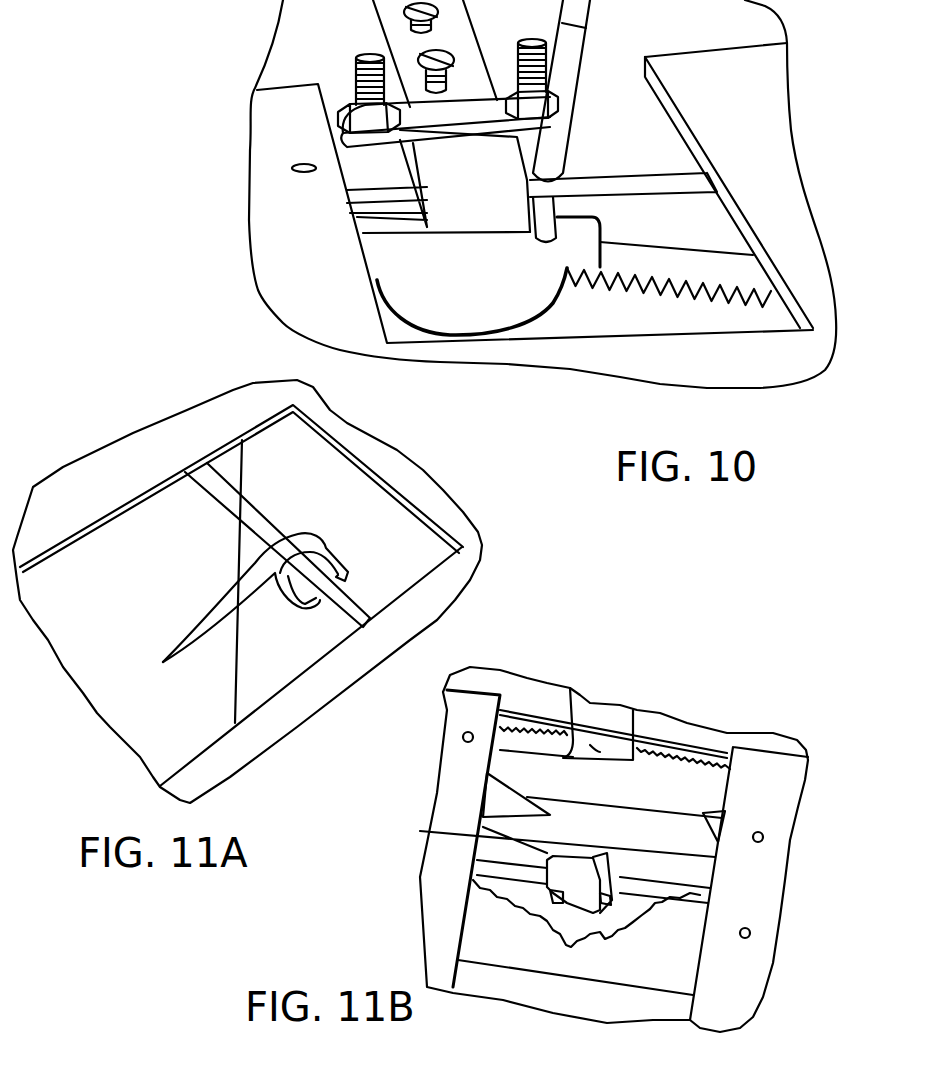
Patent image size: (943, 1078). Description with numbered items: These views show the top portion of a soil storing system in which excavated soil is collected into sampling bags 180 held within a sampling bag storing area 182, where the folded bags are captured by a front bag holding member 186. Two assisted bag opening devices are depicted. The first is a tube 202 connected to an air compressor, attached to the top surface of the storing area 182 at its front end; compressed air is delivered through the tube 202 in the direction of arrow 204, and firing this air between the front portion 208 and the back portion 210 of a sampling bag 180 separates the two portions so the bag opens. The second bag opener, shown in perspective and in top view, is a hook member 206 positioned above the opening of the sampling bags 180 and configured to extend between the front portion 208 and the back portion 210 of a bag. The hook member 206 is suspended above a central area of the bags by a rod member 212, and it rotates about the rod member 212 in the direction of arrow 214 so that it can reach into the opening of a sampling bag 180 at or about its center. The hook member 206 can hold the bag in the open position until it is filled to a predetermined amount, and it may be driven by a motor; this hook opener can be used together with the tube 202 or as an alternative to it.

In FIG. 10, the sampling bag 180 is at (687, 307).
In FIG. 10, the sampling bag storing area 182 is at (600, 160).
In FIG. 10, the front bag holding member 186 is at (450, 253).
In FIG. 11B, the front bag holding member 186 is at (500, 750).
In FIG. 10, the tube 202 is at (600, 231).
In FIG. 10, the arrow 204 is at (542, 250).
In FIG. 11A, the hook member 206 is at (203, 612).
In FIG. 11B, the hook member 206 is at (566, 862).
In FIG. 10, the front portion 208 is at (600, 307).
In FIG. 11B, the front portion 208 is at (557, 922).
In FIG. 10, the back portion 210 is at (690, 258).
In FIG. 11B, the back portion 210 is at (672, 772).
In FIG. 11A, the rod member 212 is at (340, 620).
In FIG. 11B, the rod member 212 is at (683, 907).
In FIG. 11A, the arrow 214 is at (206, 545).
In FIG. 11B, the arrow 214 is at (630, 872).